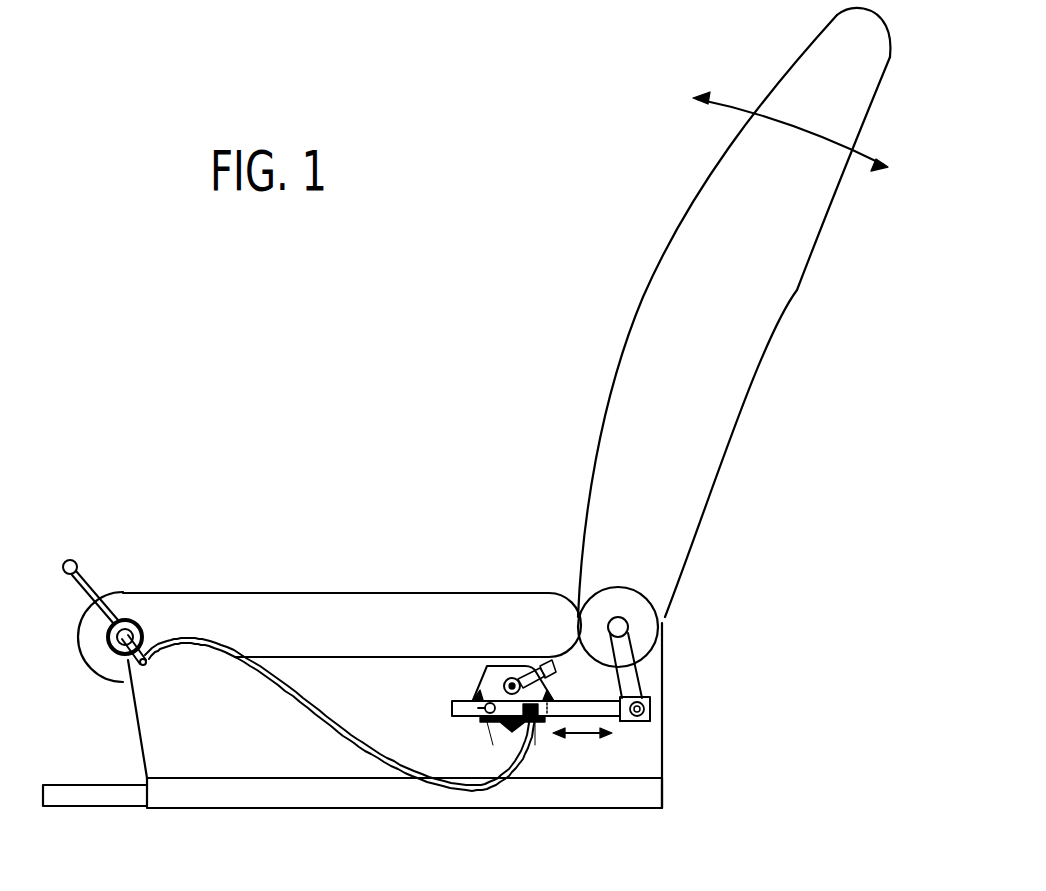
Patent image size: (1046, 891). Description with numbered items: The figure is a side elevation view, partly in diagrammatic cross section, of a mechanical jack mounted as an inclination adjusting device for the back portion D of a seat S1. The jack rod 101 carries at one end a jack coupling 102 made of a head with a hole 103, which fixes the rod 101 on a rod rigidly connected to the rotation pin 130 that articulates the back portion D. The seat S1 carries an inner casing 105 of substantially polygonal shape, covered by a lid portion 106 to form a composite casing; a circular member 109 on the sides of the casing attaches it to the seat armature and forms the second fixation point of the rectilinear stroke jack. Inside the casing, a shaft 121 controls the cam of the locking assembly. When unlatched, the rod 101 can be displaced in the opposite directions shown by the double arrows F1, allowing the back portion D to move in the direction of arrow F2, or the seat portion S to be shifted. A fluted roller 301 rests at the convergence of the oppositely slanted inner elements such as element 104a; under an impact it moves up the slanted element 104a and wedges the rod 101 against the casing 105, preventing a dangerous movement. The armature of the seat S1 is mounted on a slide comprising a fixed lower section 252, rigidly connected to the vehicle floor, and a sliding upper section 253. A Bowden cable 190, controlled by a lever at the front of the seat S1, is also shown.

The back portion D is at (762, 280).
The seat portion S is at (320, 617).
The seat S1 is at (225, 735).
The double arrows F1 is at (582, 750).
The arrow F2 is at (790, 131).
The rod 101 is at (580, 710).
The jack coupling 102 is at (628, 722).
The hole 103 is at (650, 705).
The slanted inner element 104a is at (500, 724).
The inner casing 105 is at (475, 722).
The lid portion 106 is at (487, 687).
The circular member 109 is at (473, 712).
The shaft 121 is at (511, 680).
The rotation pin 130 is at (622, 624).
The Bowden cable 190 is at (360, 780).
The lower section 252 is at (83, 795).
The upper section 253 is at (253, 790).
The fluted roller 301 is at (541, 724).